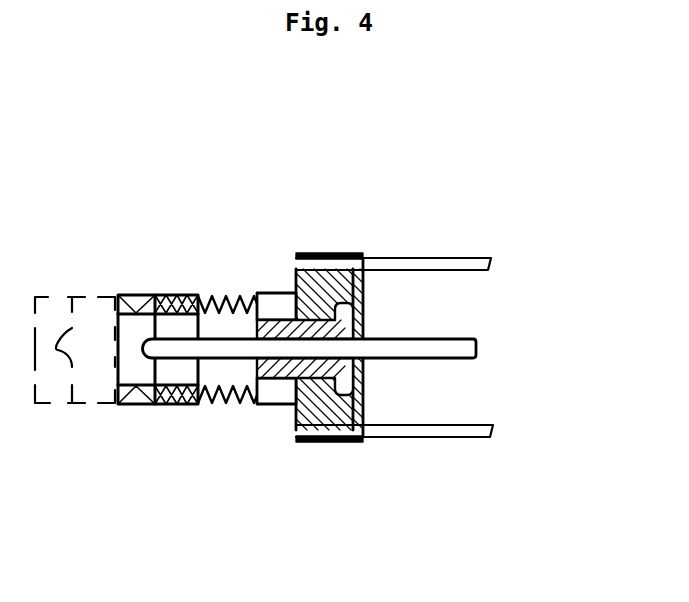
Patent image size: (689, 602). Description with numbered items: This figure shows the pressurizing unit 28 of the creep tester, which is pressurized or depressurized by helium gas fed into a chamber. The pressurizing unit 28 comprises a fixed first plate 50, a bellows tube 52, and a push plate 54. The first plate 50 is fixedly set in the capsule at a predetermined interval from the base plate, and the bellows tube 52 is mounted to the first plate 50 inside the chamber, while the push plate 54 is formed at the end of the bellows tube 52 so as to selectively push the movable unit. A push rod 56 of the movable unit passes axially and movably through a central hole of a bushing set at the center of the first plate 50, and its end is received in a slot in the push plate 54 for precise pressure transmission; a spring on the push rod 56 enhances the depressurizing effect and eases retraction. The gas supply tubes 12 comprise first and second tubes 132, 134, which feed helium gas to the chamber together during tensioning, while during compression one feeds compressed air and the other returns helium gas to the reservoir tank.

The pressurizing unit 28 is at (394, 170).
The first plate 50 is at (346, 256).
The bellows tube 52 is at (230, 295).
The push plate 54 is at (145, 296).
The push rod 56 is at (405, 360).
The gas supply tubes 12 is at (563, 202).
The first tube 132 is at (455, 265).
The second tube 134 is at (488, 424).